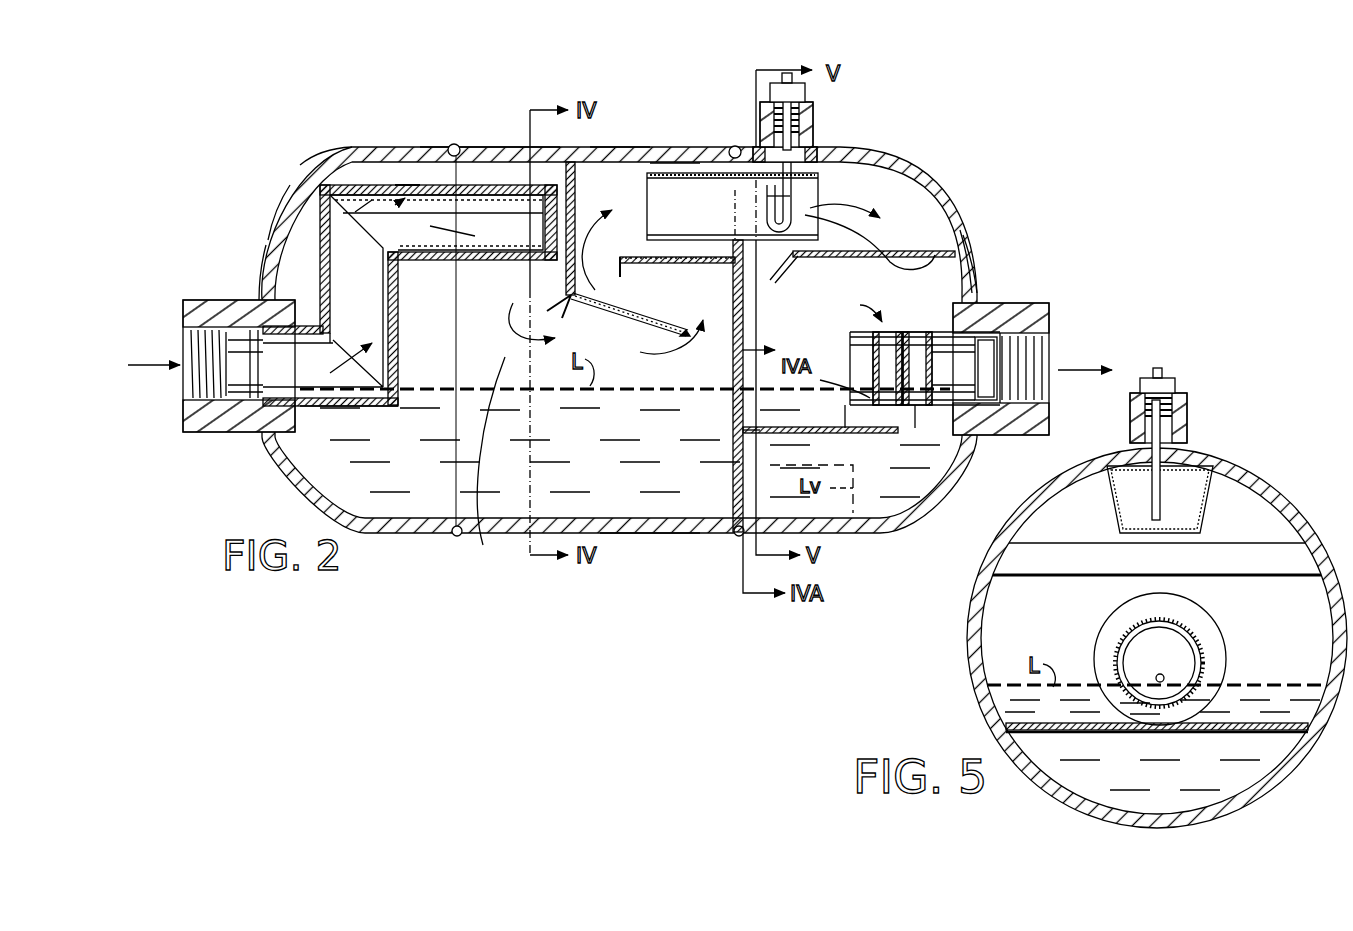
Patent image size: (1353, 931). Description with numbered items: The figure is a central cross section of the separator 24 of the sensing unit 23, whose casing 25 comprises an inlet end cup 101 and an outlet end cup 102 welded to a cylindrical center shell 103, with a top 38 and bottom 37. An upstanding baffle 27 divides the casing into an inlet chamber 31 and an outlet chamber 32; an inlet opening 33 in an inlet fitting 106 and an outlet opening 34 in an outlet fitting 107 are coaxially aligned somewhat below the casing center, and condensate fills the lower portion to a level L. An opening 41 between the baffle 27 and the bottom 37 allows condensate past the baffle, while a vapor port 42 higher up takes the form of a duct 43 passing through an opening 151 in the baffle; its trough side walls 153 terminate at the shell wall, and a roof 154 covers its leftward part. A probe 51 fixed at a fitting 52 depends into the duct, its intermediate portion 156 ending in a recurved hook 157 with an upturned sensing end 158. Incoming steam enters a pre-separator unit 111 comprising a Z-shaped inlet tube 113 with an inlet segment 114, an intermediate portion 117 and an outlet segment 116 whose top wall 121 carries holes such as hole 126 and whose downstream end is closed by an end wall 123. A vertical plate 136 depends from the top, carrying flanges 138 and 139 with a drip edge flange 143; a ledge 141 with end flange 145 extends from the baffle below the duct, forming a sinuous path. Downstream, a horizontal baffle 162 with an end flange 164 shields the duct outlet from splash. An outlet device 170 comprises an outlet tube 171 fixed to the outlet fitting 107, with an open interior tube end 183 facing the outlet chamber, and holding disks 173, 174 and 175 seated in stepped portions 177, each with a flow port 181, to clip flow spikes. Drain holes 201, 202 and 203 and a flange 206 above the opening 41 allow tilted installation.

In FIG. 2, the sensing unit 23 is at (272, 130).
In FIG. 2, the top wall 121 is at (368, 112).
In FIG. 2, the cylindrical center shell 103 is at (490, 146).
In FIG. 2, the hole 126 is at (405, 186).
In FIG. 2, the separator 24 is at (292, 182).
In FIG. 2, the casing 25 is at (280, 218).
In FIG. 2, the inlet end cup 101 is at (264, 259).
In FIG. 2, the inlet fitting 106 is at (212, 302).
In FIG. 2, the inlet opening 33 is at (196, 394).
In FIG. 2, the end wall 123 is at (568, 163).
In FIG. 2, the top 38 is at (610, 147).
In FIG. 2, the vapor port 42 is at (655, 172).
In FIG. 2, the roof 154 is at (690, 173).
In FIG. 2, the fitting 52 is at (806, 97).
In FIG. 2, the vapor flow sensing probe 51 is at (795, 152).
In FIG. 2, the intermediate portion 156 is at (793, 197).
In FIG. 2, the probe end 158 is at (770, 197).
In FIG. 2, the duct 43 is at (732, 206).
In FIG. 5, the duct 43 is at (1212, 506).
In FIG. 2, the opening 151 is at (726, 215).
In FIG. 2, the hook 157 is at (795, 240).
In FIG. 2, the drain hole 203 is at (869, 202).
In FIG. 2, the outlet end cup 102 is at (950, 230).
In FIG. 2, the outlet chamber 32 is at (955, 272).
In FIG. 2, the outlet fitting 107 is at (1040, 305).
In FIG. 5, the outlet fitting 107 is at (1118, 620).
In FIG. 2, the outlet opening 34 is at (1045, 344).
In FIG. 2, the vertical plate 136 is at (577, 202).
In FIG. 2, the end flange 145 is at (626, 267).
In FIG. 2, the ledge 141 is at (698, 260).
In FIG. 2, the end flange 164 is at (782, 277).
In FIG. 2, the horizontal baffle 162 is at (898, 258).
In FIG. 5, the horizontal baffle 162 is at (1243, 550).
In FIG. 2, the outlet device 170 is at (855, 308).
In FIG. 2, the outlet tube 171 is at (900, 336).
In FIG. 5, the outlet tube 171 is at (1154, 480).
In FIG. 2, the flange 138 is at (552, 307).
In FIG. 2, the flange 139 is at (628, 322).
In FIG. 2, the end flange 143 is at (680, 337).
In FIG. 2, the drain hole 201 is at (549, 321).
In FIG. 2, the drain hole 202 is at (691, 324).
In FIG. 2, the baffle 27 is at (734, 368).
In FIG. 2, the tube inlet 183 is at (832, 377).
In FIG. 2, the disk 173 is at (872, 387).
In FIG. 5, the disk 173 is at (1168, 647).
In FIG. 2, the disk 175 is at (958, 387).
In FIG. 2, the opening 41 is at (742, 442).
In FIG. 2, the flange 206 is at (850, 437).
In FIG. 5, the flange 206 is at (1252, 734).
In FIG. 2, the disk 174 is at (864, 433).
In FIG. 2, the stepped portion 177 is at (945, 462).
In FIG. 2, the inlet chamber 31 is at (484, 464).
In FIG. 2, the bottom 37 is at (632, 531).
In FIG. 2, the intermediate portion 117 is at (398, 285).
In FIG. 2, the outlet segment 116 is at (508, 260).
In FIG. 2, the pre-separator unit 111 is at (402, 312).
In FIG. 2, the inlet tube 113 is at (400, 354).
In FIG. 2, the inlet segment 114 is at (356, 410).
In FIG. 5, the side walls 153 is at (1118, 510).
In FIG. 5, the flow port 181 is at (1164, 679).